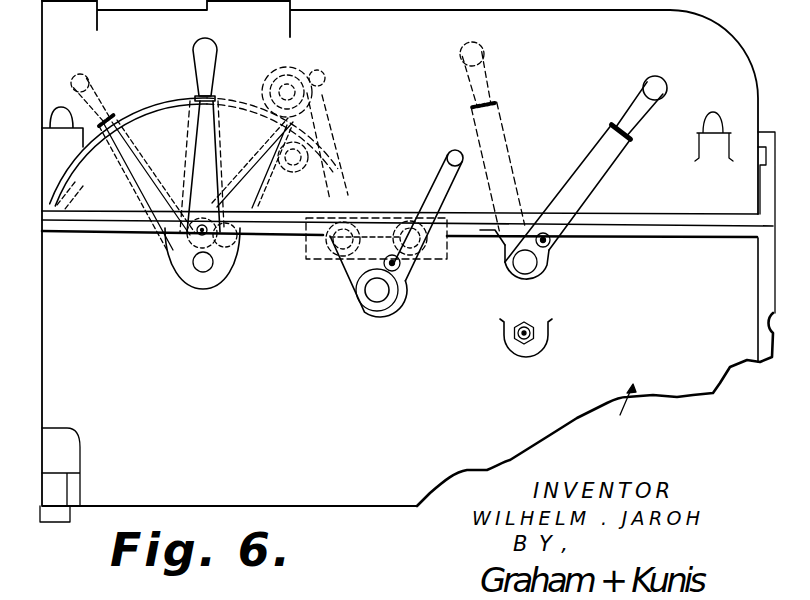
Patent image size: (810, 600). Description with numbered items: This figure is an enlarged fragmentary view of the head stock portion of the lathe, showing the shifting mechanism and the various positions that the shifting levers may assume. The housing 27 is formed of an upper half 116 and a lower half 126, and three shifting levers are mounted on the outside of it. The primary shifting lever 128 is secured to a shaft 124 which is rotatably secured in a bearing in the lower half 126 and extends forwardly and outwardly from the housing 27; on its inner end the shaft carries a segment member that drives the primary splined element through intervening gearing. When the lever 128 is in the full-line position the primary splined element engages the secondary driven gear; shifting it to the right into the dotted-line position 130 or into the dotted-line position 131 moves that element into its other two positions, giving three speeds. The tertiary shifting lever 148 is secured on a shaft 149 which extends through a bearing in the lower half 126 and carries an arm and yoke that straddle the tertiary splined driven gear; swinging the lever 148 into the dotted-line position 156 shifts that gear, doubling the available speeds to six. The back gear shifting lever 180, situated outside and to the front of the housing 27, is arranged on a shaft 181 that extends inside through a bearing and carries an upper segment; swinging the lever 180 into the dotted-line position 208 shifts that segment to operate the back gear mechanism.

The upper half of the housing 116 is at (727, 60).
The shaft 124 is at (203, 263).
The lower half of the housing 126 is at (538, 418).
The primary shifting lever 128 is at (218, 108).
The dotted-line position of primary shifting lever 130 is at (272, 150).
The dotted-line position of primary shifting lever 131 is at (103, 112).
The tertiary shifting lever 148 is at (430, 183).
The shaft 149 is at (375, 292).
The dotted-line position of tertiary shifting lever 156 is at (350, 197).
The back gear shifting lever 180 is at (590, 167).
The shaft 181 is at (523, 262).
The dotted-line position of back gear shifting lever 208 is at (483, 93).
The housing 27 is at (635, 412).